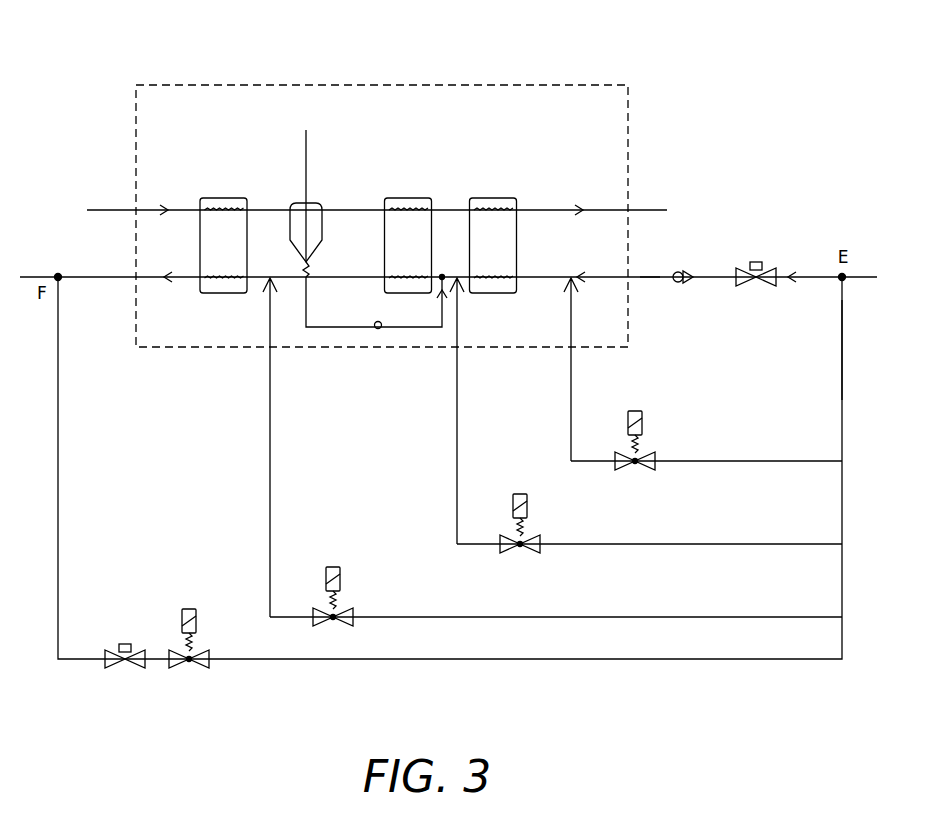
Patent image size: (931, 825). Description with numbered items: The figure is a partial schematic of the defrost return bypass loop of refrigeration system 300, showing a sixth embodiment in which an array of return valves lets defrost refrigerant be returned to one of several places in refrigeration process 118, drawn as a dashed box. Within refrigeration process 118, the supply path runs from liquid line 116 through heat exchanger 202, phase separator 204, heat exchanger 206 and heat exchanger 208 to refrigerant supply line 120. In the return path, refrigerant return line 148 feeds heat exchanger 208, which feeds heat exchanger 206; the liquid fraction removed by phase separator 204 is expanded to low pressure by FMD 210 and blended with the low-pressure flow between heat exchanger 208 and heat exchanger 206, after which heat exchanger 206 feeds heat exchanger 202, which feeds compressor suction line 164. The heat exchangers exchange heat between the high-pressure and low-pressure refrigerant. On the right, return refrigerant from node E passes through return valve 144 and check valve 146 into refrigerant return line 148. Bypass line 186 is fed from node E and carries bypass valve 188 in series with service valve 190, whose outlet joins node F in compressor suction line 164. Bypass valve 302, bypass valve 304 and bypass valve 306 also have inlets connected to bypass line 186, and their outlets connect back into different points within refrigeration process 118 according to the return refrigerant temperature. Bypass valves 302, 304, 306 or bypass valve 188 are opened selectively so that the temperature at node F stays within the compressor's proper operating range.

The refrigeration process 118 is at (212, 80).
The refrigeration system 300 is at (760, 90).
The liquid line 116 is at (118, 210).
The refrigerant supply line 120 is at (637, 210).
The compressor suction line 164 is at (118, 277).
The refrigerant return line 148 is at (640, 277).
The heat exchanger 202 is at (227, 198).
The phase separator 204 is at (316, 203).
The heat exchanger 206 is at (405, 198).
The heat exchanger 208 is at (500, 198).
The FMD 210 is at (375, 323).
The bypass valve 302 is at (647, 455).
The bypass valve 304 is at (530, 535).
The bypass valve 306 is at (345, 610).
The bypass valve 188 is at (200, 668).
The service valve 190 is at (138, 668).
The return valve 144 is at (767, 290).
The check valve 146 is at (673, 290).
The bypass line 186 is at (842, 355).